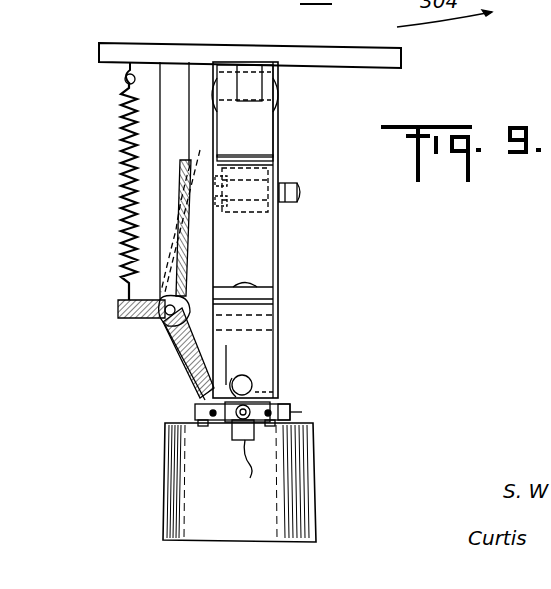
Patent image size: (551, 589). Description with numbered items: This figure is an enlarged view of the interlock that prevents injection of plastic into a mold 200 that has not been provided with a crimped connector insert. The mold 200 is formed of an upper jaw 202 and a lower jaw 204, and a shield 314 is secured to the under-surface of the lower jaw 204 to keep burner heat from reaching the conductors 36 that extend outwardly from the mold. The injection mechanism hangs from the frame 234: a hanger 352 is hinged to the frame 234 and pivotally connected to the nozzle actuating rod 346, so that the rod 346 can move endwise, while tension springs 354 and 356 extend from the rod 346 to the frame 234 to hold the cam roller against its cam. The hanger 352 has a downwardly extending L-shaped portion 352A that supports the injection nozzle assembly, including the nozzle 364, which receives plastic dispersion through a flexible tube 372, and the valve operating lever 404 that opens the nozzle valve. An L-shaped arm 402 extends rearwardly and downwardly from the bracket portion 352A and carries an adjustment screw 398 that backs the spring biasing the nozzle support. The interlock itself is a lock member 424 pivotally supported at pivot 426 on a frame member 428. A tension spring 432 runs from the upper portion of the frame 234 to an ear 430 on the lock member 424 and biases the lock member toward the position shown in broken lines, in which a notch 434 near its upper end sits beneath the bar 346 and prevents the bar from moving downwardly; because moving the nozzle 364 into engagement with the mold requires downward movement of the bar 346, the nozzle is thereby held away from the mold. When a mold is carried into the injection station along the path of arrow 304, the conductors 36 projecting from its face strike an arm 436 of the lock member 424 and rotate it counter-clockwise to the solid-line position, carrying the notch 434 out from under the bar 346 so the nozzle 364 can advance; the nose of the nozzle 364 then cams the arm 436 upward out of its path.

The frame 234 is at (147, 46).
The arrow 304 is at (133, 466).
The frame member 428 is at (160, 93).
The tension spring 432 is at (125, 160).
The ear 430 is at (118, 311).
The pivot 426 is at (162, 320).
The lock member 424 is at (175, 345).
The hanger 352 is at (270, 116).
The L-shaped portion 352A is at (268, 272).
The tension spring 354 is at (215, 160).
The nozzle actuating rod 346 is at (263, 172).
The notch 434 is at (213, 216).
The tension spring 356 is at (300, 192).
The L-shaped arm 402 is at (268, 340).
The valve operating lever 404 is at (226, 384).
The adjustment screw 398 is at (250, 376).
The arm 436 is at (270, 386).
The mold 200 is at (196, 410).
The jaw 202 is at (288, 410).
The jaw 204 is at (292, 418).
The conductors 36 is at (222, 420).
The nozzle 364 is at (227, 454).
The flexible tube 372 is at (250, 466).
The shield 314 is at (182, 518).